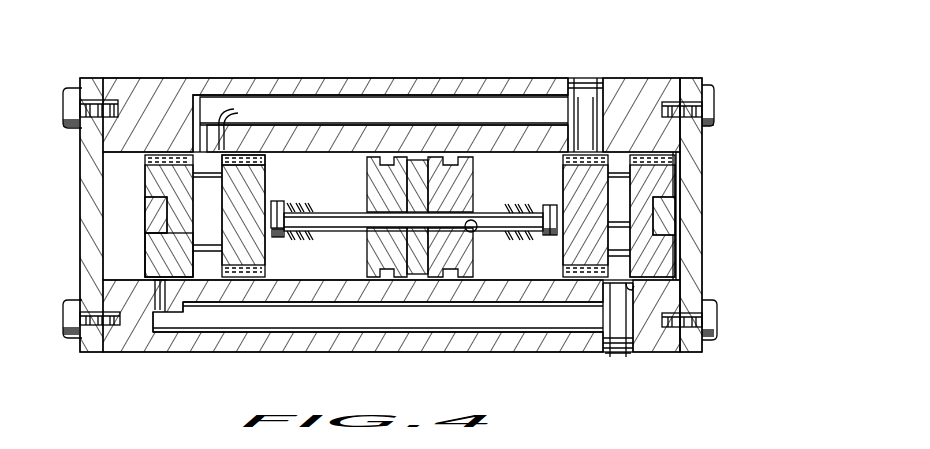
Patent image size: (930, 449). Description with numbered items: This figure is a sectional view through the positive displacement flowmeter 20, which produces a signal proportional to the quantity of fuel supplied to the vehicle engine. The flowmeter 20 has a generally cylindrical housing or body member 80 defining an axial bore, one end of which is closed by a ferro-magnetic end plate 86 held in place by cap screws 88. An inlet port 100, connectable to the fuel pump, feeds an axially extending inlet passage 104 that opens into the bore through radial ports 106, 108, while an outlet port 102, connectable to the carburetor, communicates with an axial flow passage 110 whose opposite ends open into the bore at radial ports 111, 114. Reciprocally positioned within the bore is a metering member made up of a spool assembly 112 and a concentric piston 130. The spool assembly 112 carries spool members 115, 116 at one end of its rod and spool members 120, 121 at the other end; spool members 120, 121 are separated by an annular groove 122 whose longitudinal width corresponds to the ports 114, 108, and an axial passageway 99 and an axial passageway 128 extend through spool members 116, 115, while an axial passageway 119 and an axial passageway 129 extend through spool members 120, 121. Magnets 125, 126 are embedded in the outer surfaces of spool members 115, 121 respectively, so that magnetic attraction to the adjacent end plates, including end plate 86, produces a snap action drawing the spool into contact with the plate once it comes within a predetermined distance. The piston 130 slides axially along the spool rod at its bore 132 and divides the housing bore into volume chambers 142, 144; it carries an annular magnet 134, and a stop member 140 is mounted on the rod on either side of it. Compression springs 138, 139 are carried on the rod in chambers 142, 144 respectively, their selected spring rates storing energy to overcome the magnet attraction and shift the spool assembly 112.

The positive displacement flowmeter 20 is at (652, 58).
The housing or body member 80 is at (664, 79).
The end plate 86 is at (694, 256).
The cap screws 88 is at (706, 338).
The axial passageway 99 is at (263, 163).
The inlet port 100 is at (630, 352).
The outlet port 102 is at (586, 79).
The inlet passage 104 is at (458, 323).
The radial port 106 is at (156, 290).
The radial port 108 is at (631, 286).
The axial flow passage 110 is at (416, 119).
The radial port 111 is at (226, 112).
The spool assembly 112 is at (140, 162).
The radial port 114 is at (592, 140).
The spool member 115 is at (148, 250).
The spool member 116 is at (258, 236).
The axial passageway 119 is at (563, 160).
The spool member 120 is at (574, 251).
The spool member 121 is at (665, 252).
The annular groove 122 is at (626, 153).
The magnet 125 is at (144, 203).
The magnet 126 is at (675, 217).
The axial passageway 128 is at (172, 158).
The axial passageway 129 is at (674, 158).
The piston 130 is at (469, 169).
The bore 132 is at (472, 225).
The annular magnet 134 is at (418, 162).
The compression spring 138 is at (318, 205).
The compression spring 139 is at (511, 208).
The stop member 140 is at (279, 203).
The volume chamber 142 is at (328, 272).
The volume chamber 144 is at (528, 273).